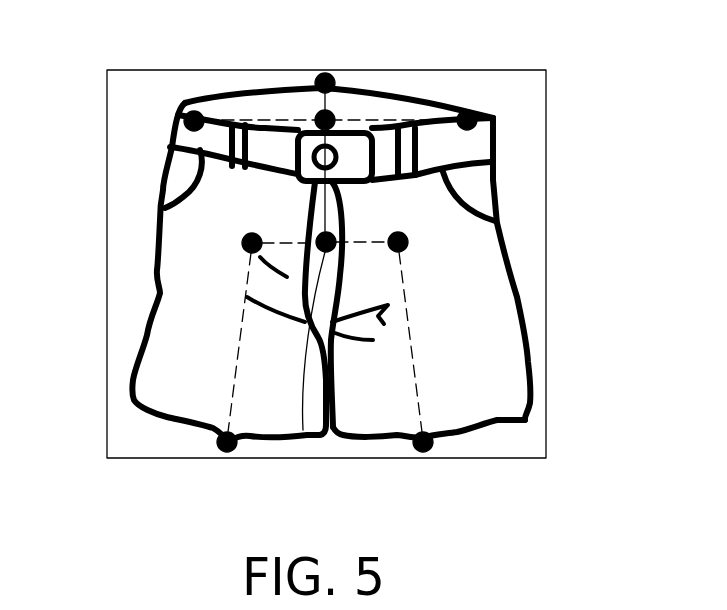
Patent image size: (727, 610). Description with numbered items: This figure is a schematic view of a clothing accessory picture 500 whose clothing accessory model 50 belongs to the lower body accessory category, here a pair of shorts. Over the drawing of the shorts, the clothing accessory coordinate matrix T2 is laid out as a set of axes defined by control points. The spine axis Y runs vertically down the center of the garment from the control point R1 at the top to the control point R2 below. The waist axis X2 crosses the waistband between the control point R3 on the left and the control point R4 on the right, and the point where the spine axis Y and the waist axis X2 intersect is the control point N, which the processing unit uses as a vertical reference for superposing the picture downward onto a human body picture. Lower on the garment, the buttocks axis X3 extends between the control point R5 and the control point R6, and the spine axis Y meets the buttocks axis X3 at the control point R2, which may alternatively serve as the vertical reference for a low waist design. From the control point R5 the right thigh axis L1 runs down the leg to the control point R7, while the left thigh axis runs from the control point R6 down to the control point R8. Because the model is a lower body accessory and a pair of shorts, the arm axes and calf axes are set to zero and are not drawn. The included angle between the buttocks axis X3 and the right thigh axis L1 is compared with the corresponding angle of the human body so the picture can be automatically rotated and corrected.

The clothing accessory model 50 is at (413, 92).
The clothing accessory picture 500 is at (548, 149).
The control point R1 is at (329, 80).
The control point N is at (318, 119).
The control point R3 is at (190, 119).
The control point R4 is at (493, 118).
The waist axis X2 is at (442, 120).
The spine axis Y is at (323, 203).
The control point R5 is at (242, 243).
The control point R6 is at (408, 242).
The buttocks axis X3 is at (360, 243).
The right thigh axis L1 is at (241, 333).
The control point R2 is at (303, 430).
The control point R7 is at (225, 452).
The control point R8 is at (426, 452).